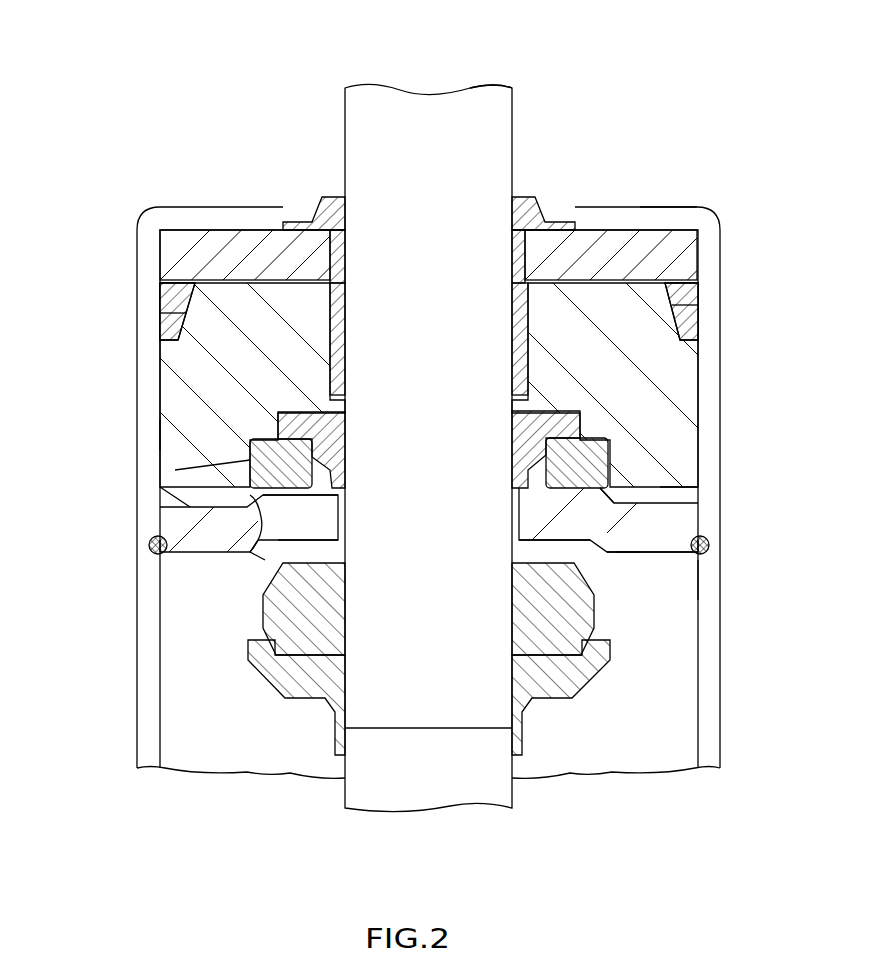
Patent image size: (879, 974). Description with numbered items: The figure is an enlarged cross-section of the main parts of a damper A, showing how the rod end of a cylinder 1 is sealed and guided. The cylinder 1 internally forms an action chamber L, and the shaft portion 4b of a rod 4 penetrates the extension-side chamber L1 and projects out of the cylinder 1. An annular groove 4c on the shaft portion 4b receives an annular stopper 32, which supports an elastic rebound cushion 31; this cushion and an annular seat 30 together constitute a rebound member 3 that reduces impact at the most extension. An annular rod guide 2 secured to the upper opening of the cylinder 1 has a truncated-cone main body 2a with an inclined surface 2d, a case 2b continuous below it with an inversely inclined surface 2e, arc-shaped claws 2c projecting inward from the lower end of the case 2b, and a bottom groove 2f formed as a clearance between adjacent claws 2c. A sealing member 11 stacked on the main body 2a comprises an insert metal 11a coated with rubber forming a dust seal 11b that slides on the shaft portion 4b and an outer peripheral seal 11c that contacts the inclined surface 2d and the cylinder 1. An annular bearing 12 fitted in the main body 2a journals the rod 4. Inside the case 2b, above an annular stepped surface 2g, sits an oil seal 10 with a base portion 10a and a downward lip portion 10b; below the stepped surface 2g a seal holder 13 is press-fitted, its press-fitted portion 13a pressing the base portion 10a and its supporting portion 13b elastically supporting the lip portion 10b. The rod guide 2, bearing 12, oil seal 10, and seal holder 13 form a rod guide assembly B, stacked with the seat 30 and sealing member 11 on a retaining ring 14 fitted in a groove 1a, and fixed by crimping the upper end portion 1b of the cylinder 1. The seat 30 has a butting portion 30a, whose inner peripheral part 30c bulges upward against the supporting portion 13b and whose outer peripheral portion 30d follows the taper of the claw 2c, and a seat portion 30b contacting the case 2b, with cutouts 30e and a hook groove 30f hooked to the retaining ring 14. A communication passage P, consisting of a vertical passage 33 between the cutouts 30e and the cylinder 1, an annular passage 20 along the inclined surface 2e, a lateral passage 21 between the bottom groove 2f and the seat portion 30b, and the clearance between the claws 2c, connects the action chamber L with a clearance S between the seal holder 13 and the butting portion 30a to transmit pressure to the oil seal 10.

The cylinder 1 is at (134, 742).
The groove 1a is at (703, 570).
The upper end portion 1b is at (665, 206).
The rod guide 2 is at (440, 433).
The main body 2a is at (700, 308).
The case 2b is at (170, 430).
The claw 2c is at (250, 556).
The inclined surface 2d is at (158, 316).
The inclined surface 2e is at (175, 497).
The bottom groove 2f is at (690, 485).
The stepped surface 2g is at (200, 462).
The rebound member 3 is at (252, 622).
The rod 4 is at (422, 419).
The shaft portion 4b is at (500, 118).
The groove 4c is at (422, 712).
The oil seal 10 is at (514, 413).
The base portion 10a is at (342, 392).
The lip portion 10b is at (318, 450).
The sealing member 11 is at (374, 200).
The insert metal 11a is at (240, 232).
The dust seal 11b is at (545, 205).
The outer peripheral seal 11c is at (158, 290).
The bearing 12 is at (516, 322).
The seal holder 13 is at (619, 432).
The press-fitted portion 13a is at (528, 402).
The supporting portion 13b is at (545, 462).
The retaining ring 14 is at (153, 552).
The annular passage 20 is at (690, 495).
The lateral passage 21 is at (627, 558).
The seat 30 is at (428, 582).
The butting portion 30a is at (315, 546).
The seat portion 30b is at (650, 558).
The inner peripheral part 30c is at (338, 500).
The outer peripheral portion 30d is at (560, 545).
The cutout 30e is at (703, 580).
The hook groove 30f is at (165, 565).
The rebound cushion 31 is at (255, 600).
The stopper 32 is at (548, 738).
The vertical passage 33 is at (710, 547).
The damper A is at (662, 130).
The rod guide assembly B is at (156, 392).
The clearance S is at (520, 510).
The communication passage P is at (703, 518).
The action chamber L is at (262, 742).
The extension-side chamber L1 is at (625, 748).